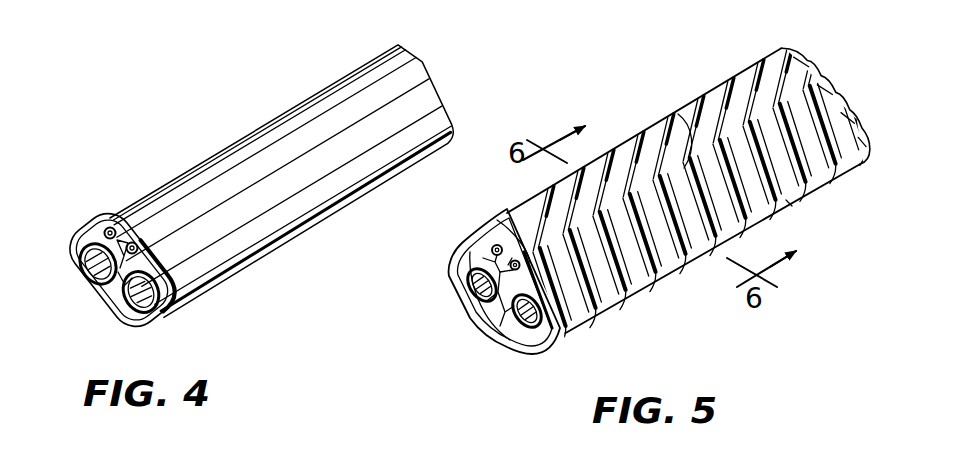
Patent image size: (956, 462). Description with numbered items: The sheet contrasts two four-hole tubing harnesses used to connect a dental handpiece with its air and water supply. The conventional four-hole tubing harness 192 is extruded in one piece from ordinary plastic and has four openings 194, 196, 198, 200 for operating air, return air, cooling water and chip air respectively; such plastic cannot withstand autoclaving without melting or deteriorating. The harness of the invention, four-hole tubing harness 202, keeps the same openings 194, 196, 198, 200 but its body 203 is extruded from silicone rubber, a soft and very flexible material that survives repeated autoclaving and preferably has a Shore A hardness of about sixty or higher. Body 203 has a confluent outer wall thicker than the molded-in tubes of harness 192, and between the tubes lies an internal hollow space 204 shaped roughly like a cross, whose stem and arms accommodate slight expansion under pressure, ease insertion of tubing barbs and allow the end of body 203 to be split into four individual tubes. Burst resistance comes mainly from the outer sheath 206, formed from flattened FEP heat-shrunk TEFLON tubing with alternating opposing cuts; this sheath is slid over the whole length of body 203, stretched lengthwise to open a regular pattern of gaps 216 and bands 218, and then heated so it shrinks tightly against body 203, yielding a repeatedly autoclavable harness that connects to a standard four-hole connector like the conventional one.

In FIG. 4, the conventional 4-hole tubing harness 192 is at (219, 104).
In FIG. 5, the conventional 4-hole tubing harness 192 is at (500, 280).
In FIG. 4, the operating air opening 194 is at (92, 284).
In FIG. 5, the operating air opening 194 is at (464, 289).
In FIG. 4, the return air opening 196 is at (147, 315).
In FIG. 5, the return air opening 196 is at (518, 336).
In FIG. 4, the cooling water opening 198 is at (104, 230).
In FIG. 5, the cooling water opening 198 is at (492, 245).
In FIG. 4, the chip air opening 200 is at (140, 254).
In FIG. 5, the chip air opening 200 is at (514, 259).
In FIG. 5, the 4-hole tubing harness 202 is at (707, 72).
In FIG. 5, the body 203 is at (462, 262).
In FIG. 5, the internal hollow space 204 is at (480, 314).
In FIG. 5, the outer sheath 206 is at (670, 254).
In FIG. 5, the gaps 216 is at (684, 116).
In FIG. 5, the bands 218 is at (790, 203).